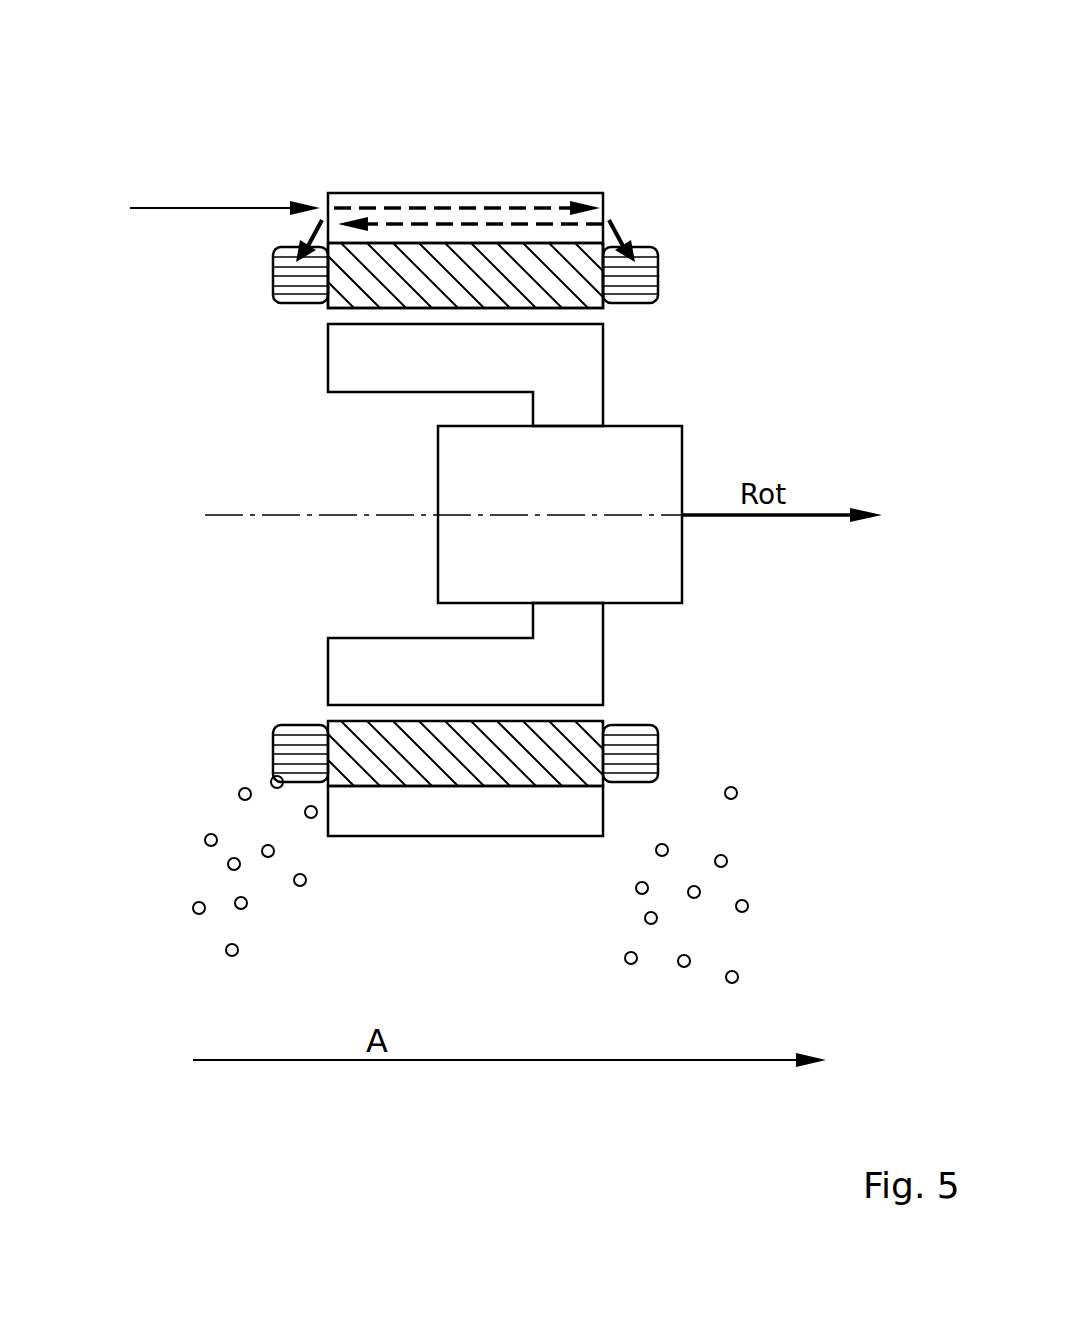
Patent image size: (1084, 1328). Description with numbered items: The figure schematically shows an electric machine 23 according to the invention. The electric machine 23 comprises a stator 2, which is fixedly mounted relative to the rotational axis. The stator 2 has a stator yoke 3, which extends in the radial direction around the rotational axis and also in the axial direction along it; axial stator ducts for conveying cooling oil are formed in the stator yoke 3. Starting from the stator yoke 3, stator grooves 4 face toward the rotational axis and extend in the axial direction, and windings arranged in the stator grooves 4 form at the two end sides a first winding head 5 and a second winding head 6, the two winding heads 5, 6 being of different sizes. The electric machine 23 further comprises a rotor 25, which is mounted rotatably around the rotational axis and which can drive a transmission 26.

The stator 2 is at (388, 193).
The stator yoke 3 is at (471, 212).
The stator grooves 4 is at (522, 270).
The first winding head 5 is at (648, 288).
The second winding head 6 is at (286, 288).
The electric machine 23 is at (672, 158).
The rotor 25 is at (328, 357).
The transmission 26 is at (648, 463).